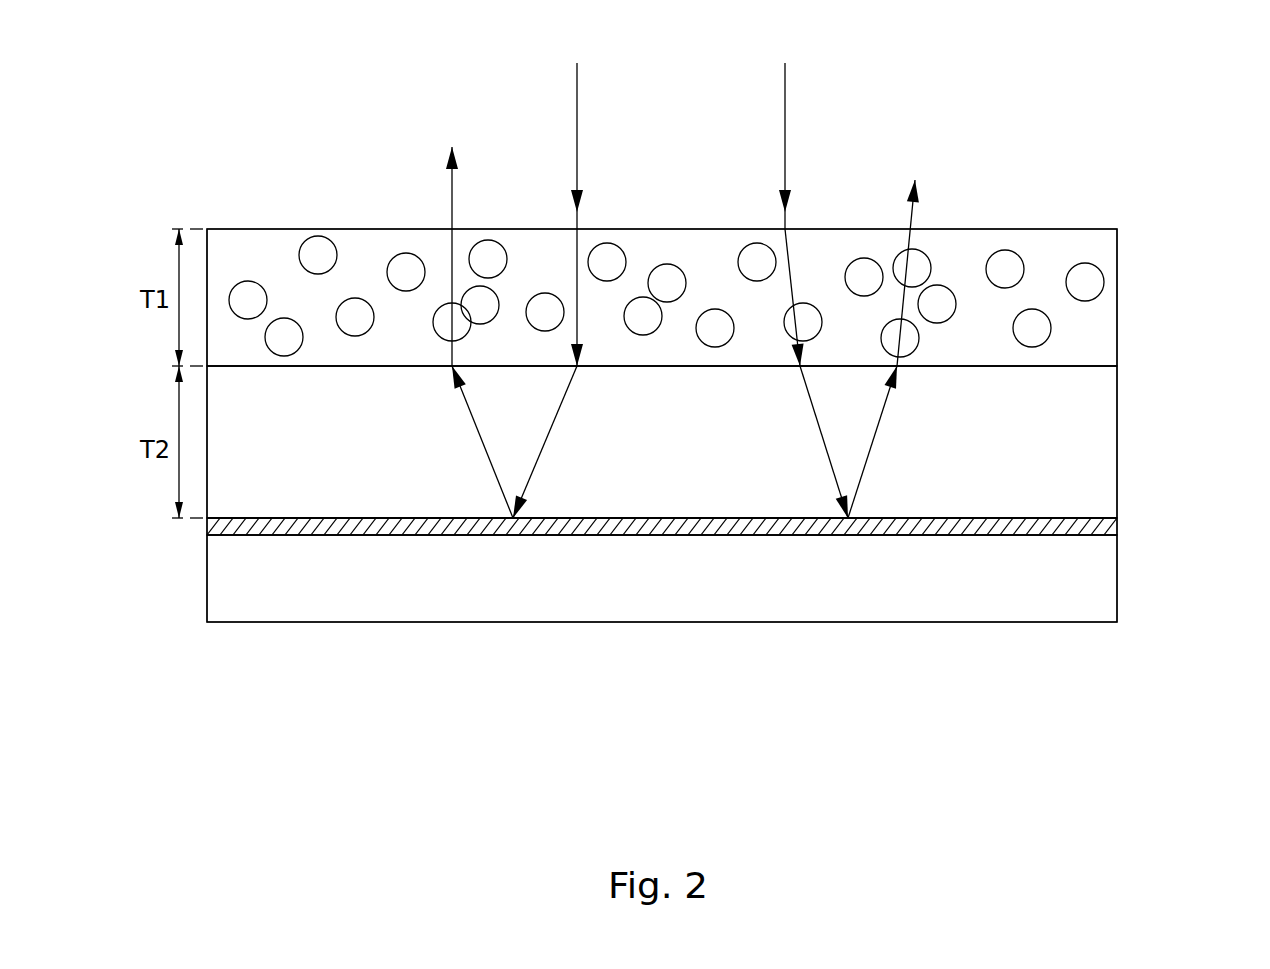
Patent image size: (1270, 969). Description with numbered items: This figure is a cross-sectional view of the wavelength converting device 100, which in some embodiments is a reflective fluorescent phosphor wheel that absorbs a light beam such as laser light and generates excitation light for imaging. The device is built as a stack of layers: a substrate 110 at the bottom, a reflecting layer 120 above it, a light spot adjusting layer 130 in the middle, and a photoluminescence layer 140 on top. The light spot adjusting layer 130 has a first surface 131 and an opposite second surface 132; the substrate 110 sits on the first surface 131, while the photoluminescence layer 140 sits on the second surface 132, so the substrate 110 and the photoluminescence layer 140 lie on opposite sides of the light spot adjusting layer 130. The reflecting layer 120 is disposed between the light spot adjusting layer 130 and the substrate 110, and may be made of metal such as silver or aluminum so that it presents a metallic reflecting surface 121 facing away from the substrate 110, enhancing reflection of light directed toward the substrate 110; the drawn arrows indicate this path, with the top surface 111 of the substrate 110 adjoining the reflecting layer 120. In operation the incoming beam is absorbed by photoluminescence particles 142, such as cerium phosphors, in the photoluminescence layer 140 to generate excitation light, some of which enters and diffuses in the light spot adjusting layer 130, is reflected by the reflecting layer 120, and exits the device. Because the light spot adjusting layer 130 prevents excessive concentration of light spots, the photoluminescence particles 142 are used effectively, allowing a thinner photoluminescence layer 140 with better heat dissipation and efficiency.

The wavelength converting device 100 is at (156, 65).
The substrate 110 is at (1090, 575).
The top surface of substrate 111 is at (910, 535).
The reflecting layer 120 is at (1090, 528).
The metallic reflecting surface 121 is at (968, 520).
The light spot adjusting layer 130 is at (1090, 447).
The first surface 131 is at (1070, 518).
The second surface 132 is at (1070, 367).
The photoluminescence layer 140 is at (1090, 333).
The photoluminescence particles 142 is at (1090, 283).